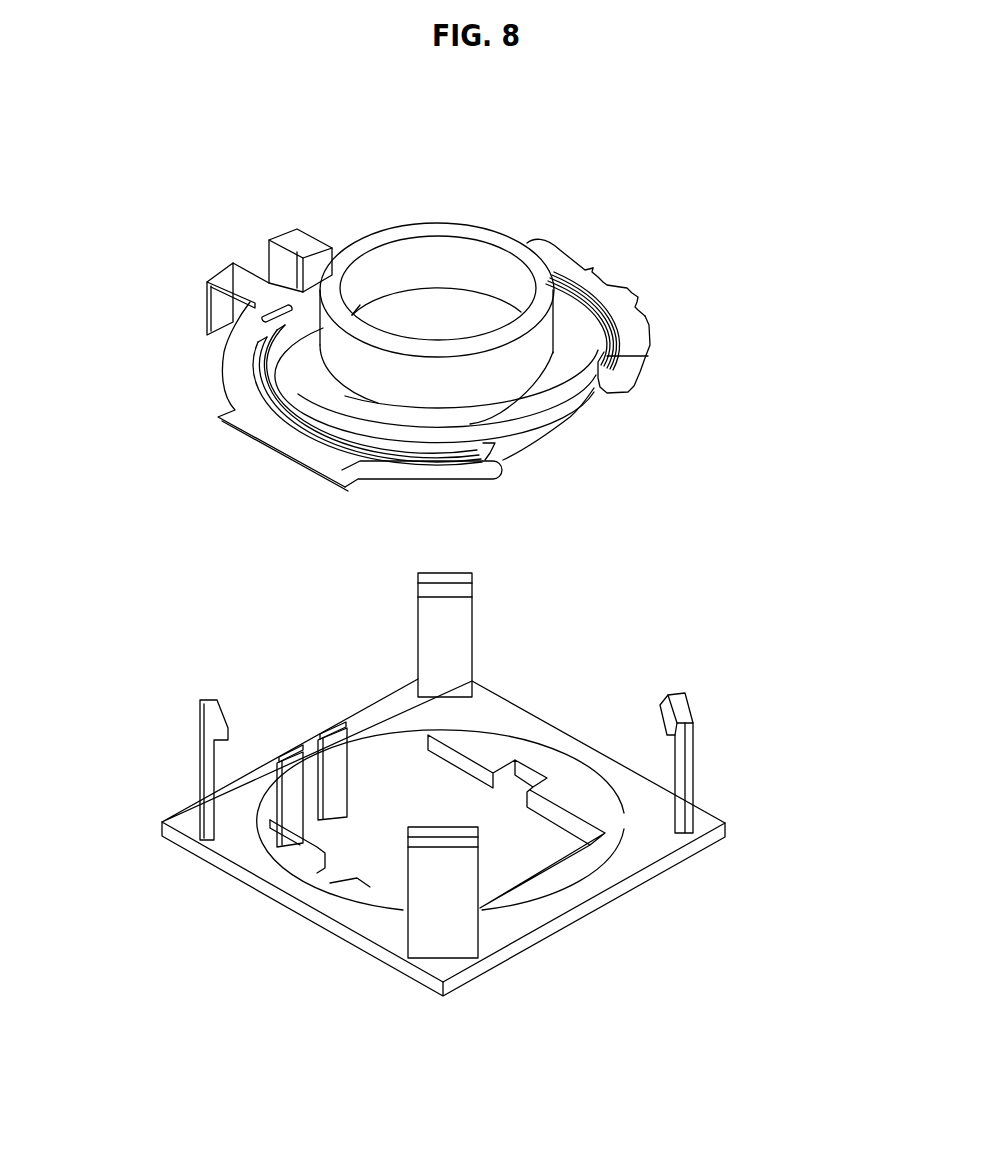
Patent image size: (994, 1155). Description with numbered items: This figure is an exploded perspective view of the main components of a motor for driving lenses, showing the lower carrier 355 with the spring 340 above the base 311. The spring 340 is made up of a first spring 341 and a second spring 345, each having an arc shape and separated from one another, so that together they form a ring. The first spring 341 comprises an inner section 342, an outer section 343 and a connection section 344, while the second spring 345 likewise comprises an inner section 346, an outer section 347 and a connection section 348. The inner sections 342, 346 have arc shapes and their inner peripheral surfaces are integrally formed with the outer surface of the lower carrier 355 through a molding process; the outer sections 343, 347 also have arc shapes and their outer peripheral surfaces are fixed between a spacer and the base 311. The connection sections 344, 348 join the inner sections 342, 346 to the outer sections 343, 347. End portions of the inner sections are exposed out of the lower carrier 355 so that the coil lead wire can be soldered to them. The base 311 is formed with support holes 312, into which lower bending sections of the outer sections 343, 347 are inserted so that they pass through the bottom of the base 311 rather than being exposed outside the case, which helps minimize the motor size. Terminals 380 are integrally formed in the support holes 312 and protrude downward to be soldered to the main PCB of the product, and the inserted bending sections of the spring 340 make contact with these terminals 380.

The base 311 is at (360, 917).
The support holes 312 is at (287, 753).
The terminals 380 is at (330, 815).
The spring 340 is at (108, 488).
The first spring 341 is at (185, 455).
The inner section 342 is at (310, 413).
The outer section 343 is at (345, 470).
The connection section 344 is at (340, 445).
The second spring 345 is at (758, 392).
The inner section 346 is at (600, 352).
The outer section 347 is at (593, 268).
The connection section 348 is at (613, 313).
The lower carrier 355 is at (455, 228).